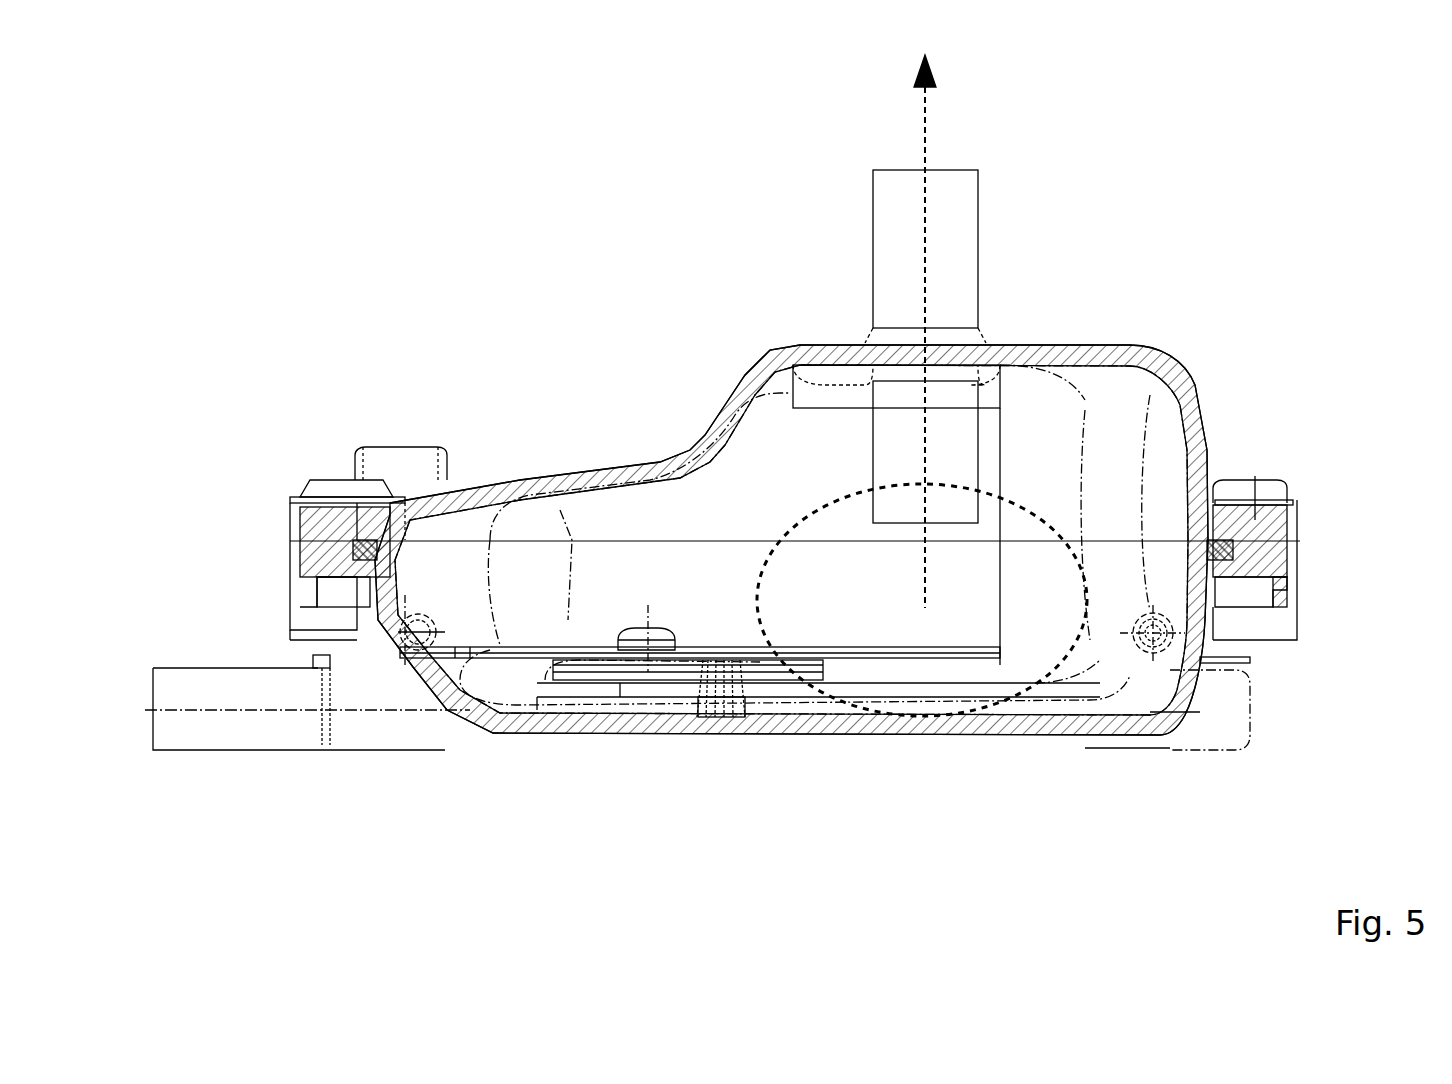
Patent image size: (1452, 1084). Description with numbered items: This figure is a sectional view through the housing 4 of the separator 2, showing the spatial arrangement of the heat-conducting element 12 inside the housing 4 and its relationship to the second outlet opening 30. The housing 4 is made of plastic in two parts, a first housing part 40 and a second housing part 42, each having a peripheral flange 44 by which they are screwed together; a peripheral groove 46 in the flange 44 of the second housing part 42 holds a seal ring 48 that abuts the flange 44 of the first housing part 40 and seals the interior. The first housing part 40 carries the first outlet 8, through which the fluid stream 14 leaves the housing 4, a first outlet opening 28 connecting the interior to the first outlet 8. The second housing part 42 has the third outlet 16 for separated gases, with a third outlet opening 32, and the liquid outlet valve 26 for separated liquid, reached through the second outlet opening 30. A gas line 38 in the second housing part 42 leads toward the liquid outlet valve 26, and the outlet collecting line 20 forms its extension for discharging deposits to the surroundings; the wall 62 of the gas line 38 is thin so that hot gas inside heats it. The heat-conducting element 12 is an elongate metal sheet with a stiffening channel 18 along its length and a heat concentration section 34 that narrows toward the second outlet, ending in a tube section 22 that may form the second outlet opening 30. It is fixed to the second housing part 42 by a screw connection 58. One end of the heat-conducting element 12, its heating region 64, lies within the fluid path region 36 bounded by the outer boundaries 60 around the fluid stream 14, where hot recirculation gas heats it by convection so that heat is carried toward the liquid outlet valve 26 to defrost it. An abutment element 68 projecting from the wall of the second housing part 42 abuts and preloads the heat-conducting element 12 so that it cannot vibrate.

The separator 2 is at (712, 360).
The housing 4 is at (752, 330).
The first outlet 8 is at (978, 197).
The heat-conducting element 12 is at (813, 680).
The fluid stream 14 is at (925, 138).
The third outlet 16 is at (1137, 680).
The stiffening channel 18 is at (770, 682).
The outlet collecting line 20 is at (180, 752).
The tube section 22 is at (413, 608).
The liquid outlet valve 26 is at (386, 443).
The first outlet opening 28 is at (955, 522).
The second outlet opening 30 is at (421, 622).
The third outlet opening 32 is at (1167, 645).
The heat concentration section 34 is at (433, 660).
The fluid path region 36 is at (1008, 497).
The gas line 38 is at (977, 695).
The first housing part 40 is at (1205, 445).
The second housing part 42 is at (1203, 657).
The peripheral flange 44 is at (1283, 517).
The peripheral groove 46 is at (1233, 557).
The seal ring 48 is at (1227, 540).
The screw connection 58 is at (641, 628).
The outer boundaries 60 is at (925, 452).
The wall 62 is at (1037, 683).
The heating region 64 is at (823, 657).
The abutment element 68 is at (706, 717).